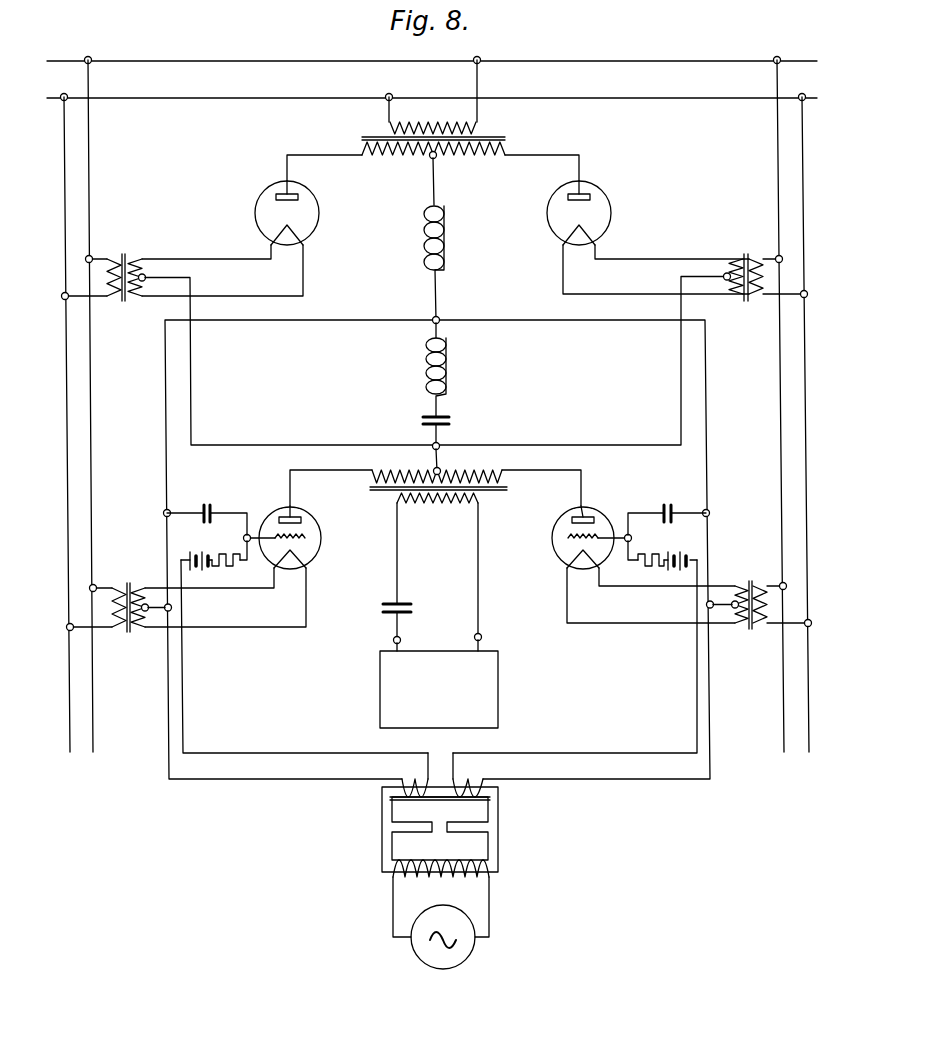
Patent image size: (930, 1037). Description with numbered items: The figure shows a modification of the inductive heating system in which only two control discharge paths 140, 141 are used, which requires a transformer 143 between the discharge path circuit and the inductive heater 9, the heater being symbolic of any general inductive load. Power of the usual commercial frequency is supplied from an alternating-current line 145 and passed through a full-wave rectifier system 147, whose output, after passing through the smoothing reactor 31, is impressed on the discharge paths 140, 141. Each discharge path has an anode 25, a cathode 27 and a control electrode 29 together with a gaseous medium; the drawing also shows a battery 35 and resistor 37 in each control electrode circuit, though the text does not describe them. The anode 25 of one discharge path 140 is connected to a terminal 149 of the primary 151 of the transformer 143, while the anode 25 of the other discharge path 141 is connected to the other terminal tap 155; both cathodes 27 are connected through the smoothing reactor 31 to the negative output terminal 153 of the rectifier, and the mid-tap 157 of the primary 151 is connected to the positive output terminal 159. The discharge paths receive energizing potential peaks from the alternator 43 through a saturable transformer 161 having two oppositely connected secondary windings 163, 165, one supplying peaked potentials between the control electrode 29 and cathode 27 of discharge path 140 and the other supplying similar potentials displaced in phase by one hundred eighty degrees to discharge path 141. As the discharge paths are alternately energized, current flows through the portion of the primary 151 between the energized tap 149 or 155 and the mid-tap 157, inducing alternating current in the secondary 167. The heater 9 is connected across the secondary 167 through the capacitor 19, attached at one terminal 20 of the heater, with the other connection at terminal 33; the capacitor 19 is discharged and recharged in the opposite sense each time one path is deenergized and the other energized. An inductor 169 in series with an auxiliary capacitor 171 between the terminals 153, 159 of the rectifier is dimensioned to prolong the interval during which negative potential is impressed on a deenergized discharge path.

The alternating-current line 145 is at (560, 89).
The full-wave rectifier system 147 is at (390, 209).
The negative output terminal 153 is at (437, 158).
The smoothing reactor 31 is at (445, 232).
The inductor 169 is at (448, 345).
The auxiliary capacitor 171 is at (422, 420).
The positive output terminal 159 is at (450, 430).
The terminal 149 is at (383, 470).
The mid-tap 157 is at (434, 471).
The primary 151 is at (452, 476).
The terminal tap 155 is at (502, 474).
The transformer 143 is at (435, 543).
The secondary 167 is at (458, 505).
The control discharge path 140 is at (275, 513).
The control discharge path 141 is at (600, 515).
The anode 25 is at (296, 519).
The control electrode 29 is at (308, 538).
The cathode 27 is at (300, 562).
The battery 35 is at (196, 555).
The grid resistor 37 is at (226, 566).
The capacitor 19 is at (428, 585).
The terminal 20 is at (411, 640).
The terminal 33 is at (476, 637).
The inductive heater 9 is at (489, 651).
The secondary winding 163 is at (395, 803).
The secondary winding 165 is at (488, 803).
The saturable transformer 161 is at (441, 815).
The alternator 43 is at (475, 948).